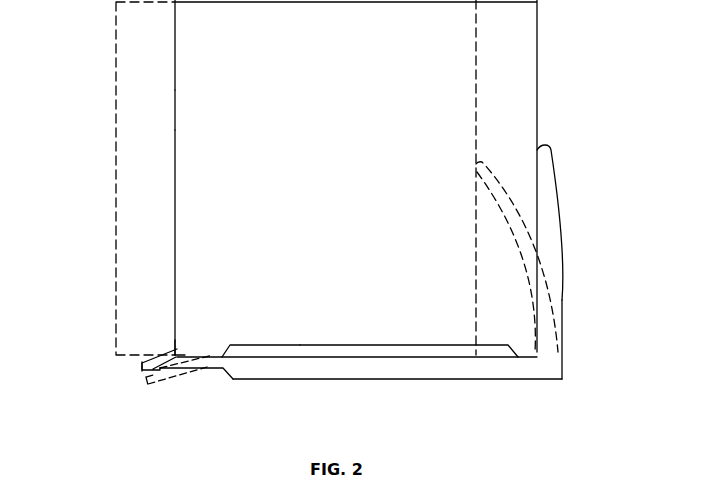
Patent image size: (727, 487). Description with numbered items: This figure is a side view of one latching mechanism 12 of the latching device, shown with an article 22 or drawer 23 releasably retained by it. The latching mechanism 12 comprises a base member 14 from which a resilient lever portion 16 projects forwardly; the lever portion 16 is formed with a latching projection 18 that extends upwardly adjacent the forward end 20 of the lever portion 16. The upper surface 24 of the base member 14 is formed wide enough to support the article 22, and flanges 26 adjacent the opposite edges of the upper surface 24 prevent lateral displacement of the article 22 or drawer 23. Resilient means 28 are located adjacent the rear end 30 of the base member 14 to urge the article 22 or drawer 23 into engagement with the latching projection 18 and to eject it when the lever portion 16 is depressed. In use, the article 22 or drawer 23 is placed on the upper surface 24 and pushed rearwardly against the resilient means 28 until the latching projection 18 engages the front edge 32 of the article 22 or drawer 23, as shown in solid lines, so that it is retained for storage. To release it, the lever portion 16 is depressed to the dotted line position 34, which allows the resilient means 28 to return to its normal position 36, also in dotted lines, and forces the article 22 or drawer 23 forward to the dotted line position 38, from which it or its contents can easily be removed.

The latching mechanism 12 is at (163, 352).
The base member 14 is at (443, 379).
The resilient lever portion 16 is at (202, 372).
The latching projection 18 is at (177, 354).
The forward end 20 is at (143, 366).
The article 22 is at (175, 87).
The drawer 23 is at (175, 113).
The upper surface 24 is at (195, 355).
The flanges 26 is at (305, 344).
The resilient means 28 is at (552, 165).
The rear end 30 is at (543, 378).
The front edge 32 is at (175, 147).
The dotted line position of lever portion 34 is at (176, 380).
The normal position of resilient means 36 is at (490, 161).
The forward position of article or drawer 38 is at (114, 18).